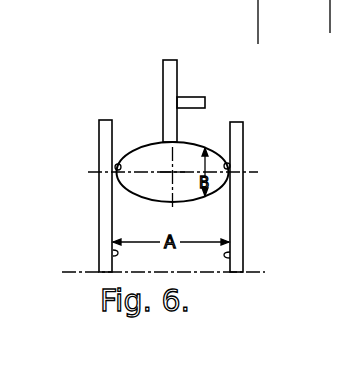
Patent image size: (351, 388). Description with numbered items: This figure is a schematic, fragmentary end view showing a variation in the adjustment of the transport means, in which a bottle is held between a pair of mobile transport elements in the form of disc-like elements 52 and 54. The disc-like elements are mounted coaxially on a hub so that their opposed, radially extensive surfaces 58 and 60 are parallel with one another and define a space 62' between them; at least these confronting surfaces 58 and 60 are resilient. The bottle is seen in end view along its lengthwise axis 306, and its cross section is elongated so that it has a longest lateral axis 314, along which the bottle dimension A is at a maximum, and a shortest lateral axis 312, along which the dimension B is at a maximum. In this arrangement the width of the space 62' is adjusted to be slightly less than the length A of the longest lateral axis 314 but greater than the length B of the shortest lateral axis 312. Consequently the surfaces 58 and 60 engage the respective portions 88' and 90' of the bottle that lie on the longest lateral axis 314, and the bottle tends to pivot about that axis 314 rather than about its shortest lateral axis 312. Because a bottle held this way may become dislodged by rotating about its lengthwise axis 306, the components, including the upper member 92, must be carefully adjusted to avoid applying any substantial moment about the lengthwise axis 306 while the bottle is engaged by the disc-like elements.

The upper support bar with tab 92 is at (175, 50).
The space 62' is at (191, 132).
The disc-like element 54 is at (93, 225).
The disc-like element 52 is at (248, 212).
The longest lateral axis 314 is at (254, 175).
The lengthwise axis 306 is at (172, 173).
The shortest lateral axis 312 is at (168, 148).
The portion of bottle 90' is at (89, 156).
The portion of bottle 88' is at (263, 143).
The radially extensive surface 60 is at (113, 254).
The radially extensive surface 58 is at (230, 256).